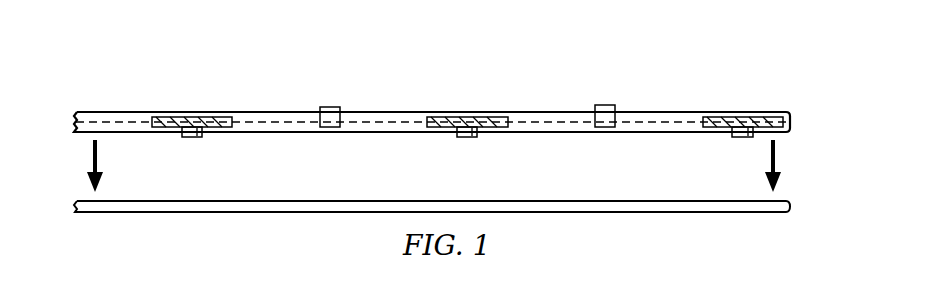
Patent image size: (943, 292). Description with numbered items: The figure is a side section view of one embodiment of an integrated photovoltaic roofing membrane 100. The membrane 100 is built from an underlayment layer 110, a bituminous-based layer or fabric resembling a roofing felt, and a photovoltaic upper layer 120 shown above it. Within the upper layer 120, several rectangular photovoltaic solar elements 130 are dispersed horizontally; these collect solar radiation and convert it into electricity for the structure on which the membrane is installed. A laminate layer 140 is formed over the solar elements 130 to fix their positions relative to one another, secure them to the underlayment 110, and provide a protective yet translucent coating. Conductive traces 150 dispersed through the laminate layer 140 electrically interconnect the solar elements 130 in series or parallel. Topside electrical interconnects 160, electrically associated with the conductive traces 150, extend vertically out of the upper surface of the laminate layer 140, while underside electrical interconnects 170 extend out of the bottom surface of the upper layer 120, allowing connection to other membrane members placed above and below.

The integrated photovoltaic roofing membrane 100 is at (226, 50).
The underlayment layer 110 is at (625, 213).
The photovoltaic upper layer 120 is at (797, 110).
The photovoltaic solar element 130 is at (450, 116).
The laminate layer 140 is at (661, 111).
The conductive trace 150 is at (112, 120).
The topside electrical interconnect 160 is at (327, 106).
The underside electrical interconnect 170 is at (190, 138).